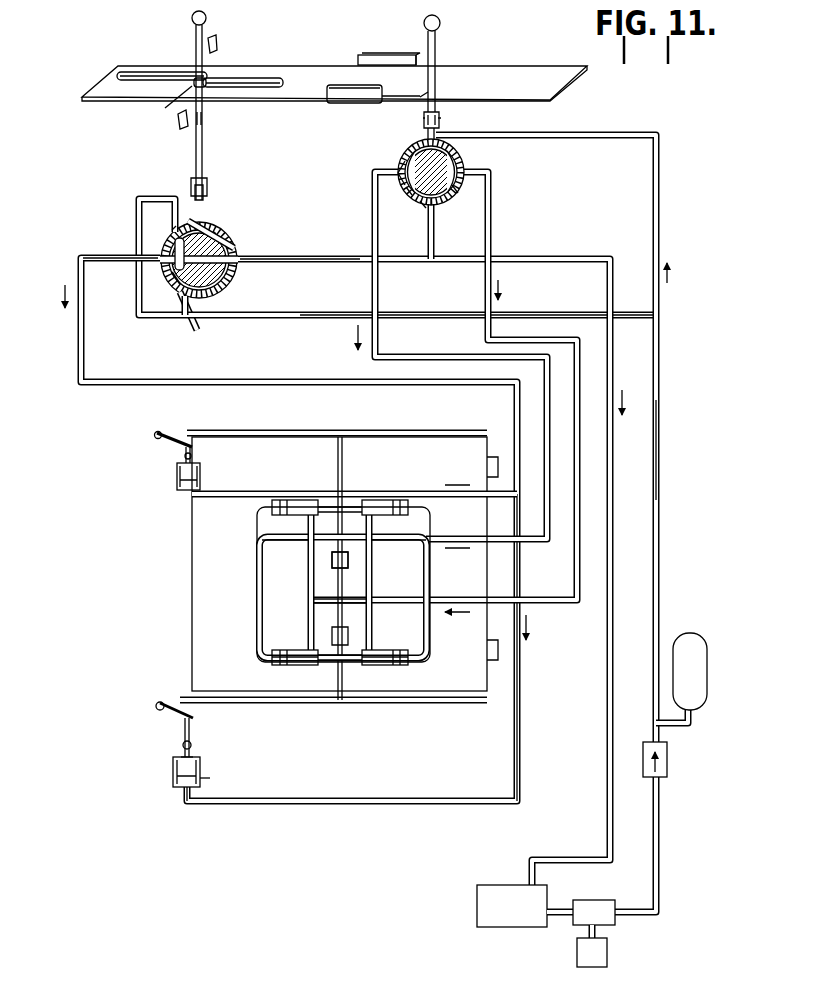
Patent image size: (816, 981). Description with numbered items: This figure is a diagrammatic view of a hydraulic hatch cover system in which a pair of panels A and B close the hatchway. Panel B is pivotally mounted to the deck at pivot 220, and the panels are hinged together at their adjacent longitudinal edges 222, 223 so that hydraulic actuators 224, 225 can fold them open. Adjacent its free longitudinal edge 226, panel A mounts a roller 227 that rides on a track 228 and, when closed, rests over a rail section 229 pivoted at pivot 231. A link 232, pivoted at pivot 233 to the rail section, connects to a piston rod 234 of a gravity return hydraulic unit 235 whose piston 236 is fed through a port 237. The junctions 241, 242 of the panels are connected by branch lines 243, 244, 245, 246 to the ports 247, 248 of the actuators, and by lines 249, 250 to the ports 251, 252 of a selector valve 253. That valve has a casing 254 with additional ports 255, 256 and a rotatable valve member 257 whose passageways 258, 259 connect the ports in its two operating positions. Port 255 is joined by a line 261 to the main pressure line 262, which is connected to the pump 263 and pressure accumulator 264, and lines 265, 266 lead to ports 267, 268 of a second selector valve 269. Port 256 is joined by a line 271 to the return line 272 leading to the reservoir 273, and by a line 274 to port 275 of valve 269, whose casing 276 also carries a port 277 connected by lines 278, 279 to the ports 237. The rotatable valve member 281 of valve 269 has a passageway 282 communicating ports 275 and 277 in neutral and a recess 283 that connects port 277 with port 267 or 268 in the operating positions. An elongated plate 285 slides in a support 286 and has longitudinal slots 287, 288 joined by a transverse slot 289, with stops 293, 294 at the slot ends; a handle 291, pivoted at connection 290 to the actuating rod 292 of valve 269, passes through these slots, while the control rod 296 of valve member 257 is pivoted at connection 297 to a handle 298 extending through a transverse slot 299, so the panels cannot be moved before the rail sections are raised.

The pivot 220 is at (498, 660).
The longitudinal edge 222 is at (340, 704).
The longitudinal edge 223 is at (345, 704).
The hydraulic actuator 224 is at (300, 667).
The hydraulic actuator 225 is at (380, 667).
The free longitudinal edge 226 is at (192, 577).
The roller 227 is at (185, 430).
The track 228 is at (302, 430).
The rail section 229 is at (172, 720).
The pivot 231 is at (156, 708).
The link 232 is at (193, 745).
The pivot 233 is at (195, 722).
The piston rod 234 is at (178, 758).
The hydraulic unit 235 is at (203, 781).
The piston 236 is at (175, 783).
The port 237 is at (186, 795).
The junction 241 is at (258, 542).
The junction 242 is at (307, 601).
The branch line 243 is at (257, 519).
The branch line 244 is at (257, 598).
The branch line 245 is at (370, 563).
The branch line 246 is at (371, 626).
The port 247 is at (280, 500).
The port 248 is at (378, 516).
The line 249 is at (545, 373).
The line 250 is at (578, 565).
The port 251 is at (435, 196).
The port 252 is at (470, 176).
The selector valve 253 is at (444, 212).
The casing 254 is at (409, 197).
The port 255 is at (425, 141).
The port 256 is at (422, 206).
The rotatable valve member 257 is at (462, 163).
The passageway 258 is at (401, 184).
The passageway 259 is at (460, 194).
The line 261 is at (661, 202).
The main pressure line 262 is at (661, 468).
The pump 263 is at (610, 890).
The pressure accumulator 264 is at (697, 623).
The line 265 is at (581, 313).
The line 266 is at (136, 237).
The port 267 is at (197, 325).
The port 268 is at (172, 217).
The selector valve 269 is at (223, 264).
The line 271 is at (428, 245).
The return line 272 is at (588, 259).
The reservoir 273 is at (490, 885).
The line 274 is at (332, 259).
The port 275 is at (236, 268).
The casing 276 is at (226, 240).
The port 277 is at (160, 263).
The line 278 is at (80, 357).
The line 279 is at (521, 652).
The rotatable valve member 281 is at (231, 289).
The passageway 282 is at (228, 252).
The recess 283 is at (172, 289).
The elongated plate 285 is at (313, 62).
The support 286 is at (386, 53).
The longitudinal slot 287 is at (140, 71).
The longitudinal slot 288 is at (240, 78).
The transverse slot 289 is at (160, 112).
The pivotal connection 290 is at (206, 176).
The handle 291 is at (206, 124).
The actuating rod 292 is at (196, 200).
The stop 293 is at (193, 176).
The stop 294 is at (218, 44).
The control rod 296 is at (441, 122).
The pivotal connection 297 is at (425, 120).
The handle 298 is at (438, 40).
The transverse slot 299 is at (440, 96).